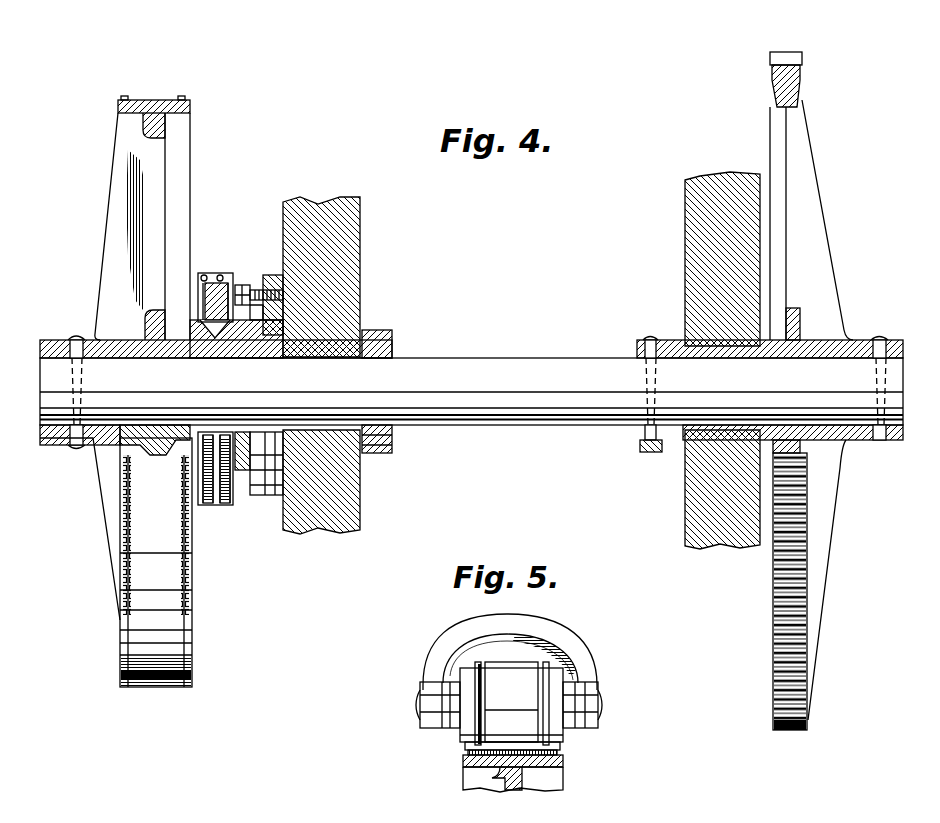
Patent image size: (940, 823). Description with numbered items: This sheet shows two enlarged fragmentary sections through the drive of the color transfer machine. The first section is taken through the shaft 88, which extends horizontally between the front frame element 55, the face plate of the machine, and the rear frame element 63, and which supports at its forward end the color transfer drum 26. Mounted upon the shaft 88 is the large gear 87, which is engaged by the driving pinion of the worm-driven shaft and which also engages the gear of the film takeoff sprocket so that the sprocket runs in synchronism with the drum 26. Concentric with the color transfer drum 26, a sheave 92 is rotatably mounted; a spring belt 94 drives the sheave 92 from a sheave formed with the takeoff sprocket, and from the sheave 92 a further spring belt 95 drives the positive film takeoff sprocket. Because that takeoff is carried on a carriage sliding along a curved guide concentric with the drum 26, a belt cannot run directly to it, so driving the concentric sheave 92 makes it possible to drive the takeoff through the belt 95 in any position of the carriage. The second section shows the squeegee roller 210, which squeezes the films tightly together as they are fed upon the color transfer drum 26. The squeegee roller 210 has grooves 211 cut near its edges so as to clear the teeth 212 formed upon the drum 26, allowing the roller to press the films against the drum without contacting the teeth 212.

In FIG. 4, the color transfer drum 26 is at (142, 523).
In FIG. 5, the color transfer drum 26 is at (483, 781).
In FIG. 4, the front frame element 55 is at (333, 288).
In FIG. 4, the rear frame element 63 is at (698, 278).
In FIG. 4, the large gear 87 is at (789, 603).
In FIG. 4, the shaft 88 is at (455, 402).
In FIG. 4, the sheave 92 is at (203, 274).
In FIG. 4, the spring belt 94 is at (224, 505).
In FIG. 4, the spring belt 95 is at (206, 505).
In FIG. 5, the squeegee roller 210 is at (517, 713).
In FIG. 5, the grooves 211 is at (482, 707).
In FIG. 5, the teeth 212 is at (560, 763).